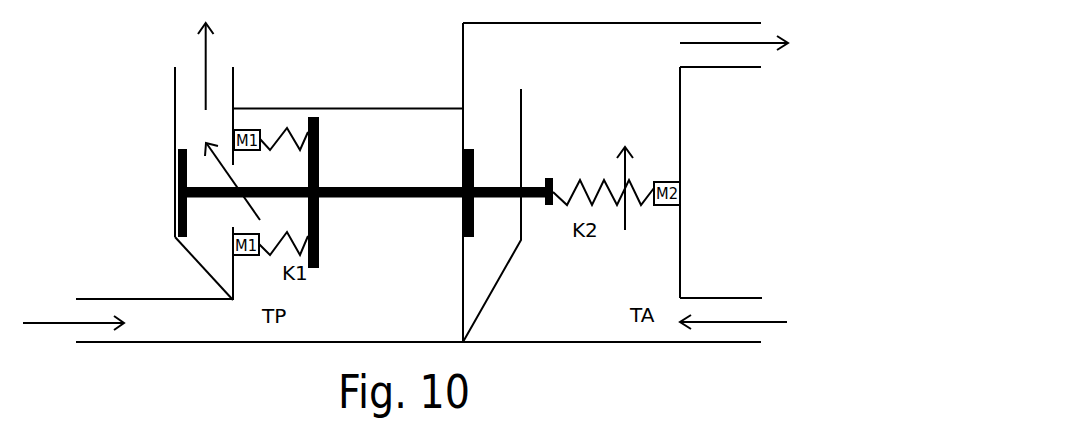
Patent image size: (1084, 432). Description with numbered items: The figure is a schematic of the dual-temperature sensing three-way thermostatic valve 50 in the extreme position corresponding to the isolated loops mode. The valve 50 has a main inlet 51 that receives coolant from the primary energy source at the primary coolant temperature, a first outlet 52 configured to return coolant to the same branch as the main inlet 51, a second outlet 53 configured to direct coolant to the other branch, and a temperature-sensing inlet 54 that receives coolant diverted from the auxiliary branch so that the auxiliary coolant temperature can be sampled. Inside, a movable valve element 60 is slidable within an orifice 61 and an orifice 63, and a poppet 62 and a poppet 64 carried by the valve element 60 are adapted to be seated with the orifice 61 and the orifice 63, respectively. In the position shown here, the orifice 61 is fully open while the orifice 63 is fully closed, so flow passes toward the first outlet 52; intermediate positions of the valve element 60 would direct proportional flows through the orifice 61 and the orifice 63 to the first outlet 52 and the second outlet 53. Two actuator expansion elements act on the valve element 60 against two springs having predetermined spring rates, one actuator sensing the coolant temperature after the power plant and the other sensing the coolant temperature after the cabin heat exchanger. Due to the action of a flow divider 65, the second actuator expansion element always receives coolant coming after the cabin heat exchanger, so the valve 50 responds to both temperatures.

The valve 50 is at (272, 348).
The main inlet 51 is at (98, 313).
The first outlet 52 is at (192, 80).
The second outlet 53 is at (747, 53).
The temperature-sensing inlet 54 is at (742, 313).
The movable valve element 60 is at (390, 187).
The orifice 61 is at (228, 226).
The poppet 62 is at (178, 178).
The orifice 63 is at (462, 223).
The poppet 64 is at (475, 168).
The flow divider 65 is at (523, 120).